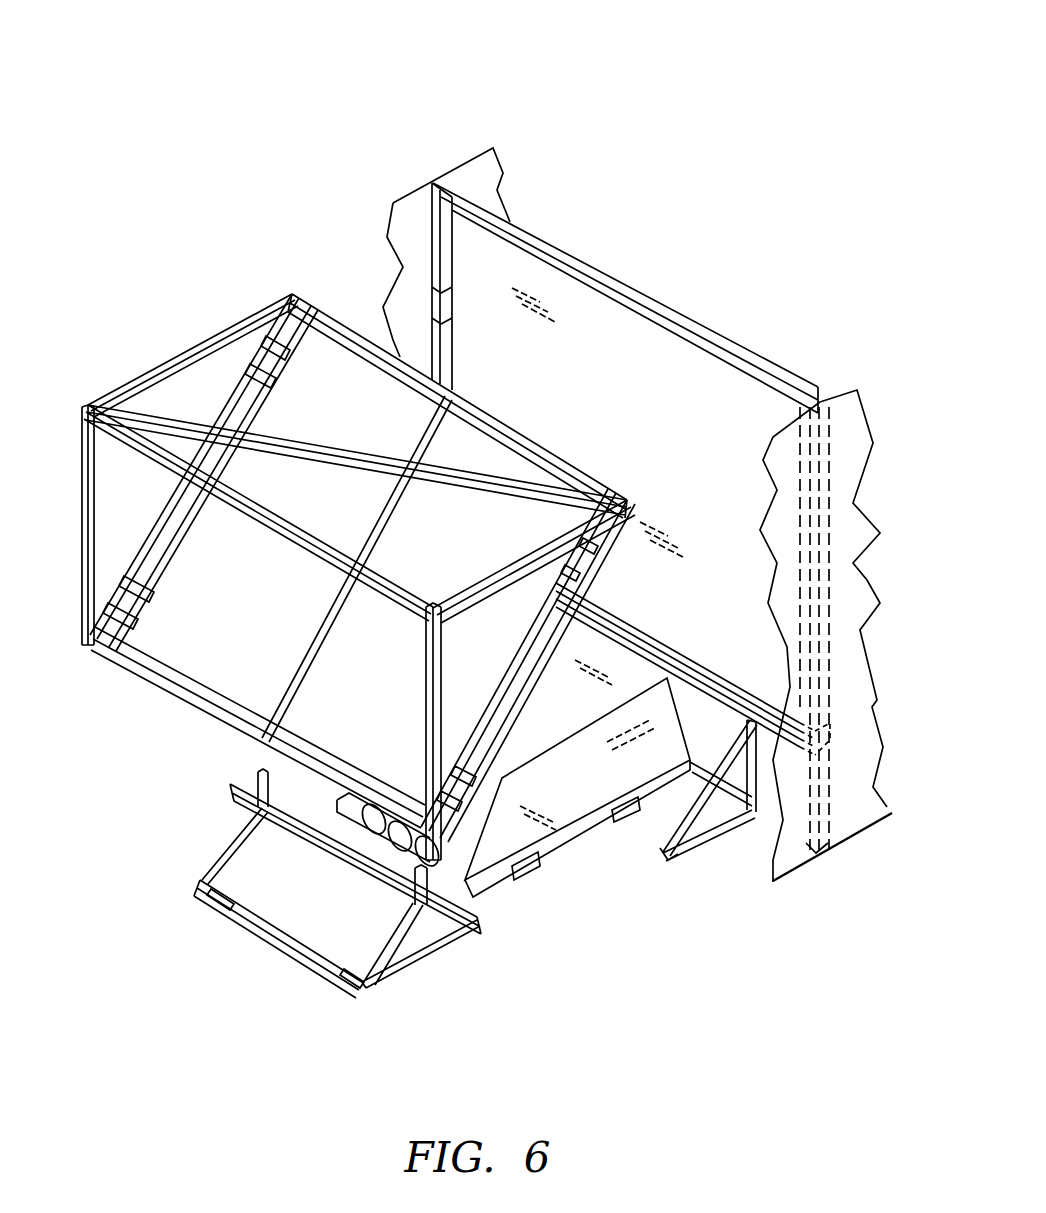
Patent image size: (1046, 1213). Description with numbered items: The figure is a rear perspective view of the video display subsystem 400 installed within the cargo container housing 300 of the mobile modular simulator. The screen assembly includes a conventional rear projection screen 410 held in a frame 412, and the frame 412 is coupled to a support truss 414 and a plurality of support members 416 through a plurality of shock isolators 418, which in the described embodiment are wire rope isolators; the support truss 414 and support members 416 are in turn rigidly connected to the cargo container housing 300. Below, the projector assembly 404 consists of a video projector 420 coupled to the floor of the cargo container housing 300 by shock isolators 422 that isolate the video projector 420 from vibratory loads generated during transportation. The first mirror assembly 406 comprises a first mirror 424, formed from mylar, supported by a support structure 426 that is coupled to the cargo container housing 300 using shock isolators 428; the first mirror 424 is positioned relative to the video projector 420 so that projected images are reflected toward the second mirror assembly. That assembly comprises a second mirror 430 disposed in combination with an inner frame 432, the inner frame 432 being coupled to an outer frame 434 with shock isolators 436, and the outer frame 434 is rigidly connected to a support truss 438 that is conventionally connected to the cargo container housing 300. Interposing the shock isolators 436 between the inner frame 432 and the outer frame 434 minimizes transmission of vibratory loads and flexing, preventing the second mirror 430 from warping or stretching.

The video display subsystem 400 is at (361, 90).
The cargo container housing 300 is at (840, 403).
The projector assembly 404 is at (535, 1003).
The first mirror assembly 406 is at (53, 864).
The rear projection screen 410 is at (560, 391).
The frame 412 is at (566, 250).
The support truss 414 is at (728, 857).
The support members 416 is at (830, 800).
The shock isolators 418 is at (673, 670).
The video projector 420 is at (600, 803).
The shock isolators 422 is at (536, 872).
The first mirror 424 is at (230, 786).
The support structure 426 is at (237, 912).
The shock isolators 428 is at (337, 975).
The second mirror 430 is at (248, 617).
The inner frame 432 is at (147, 648).
The outer frame 434 is at (306, 300).
The shock isolators 436 is at (262, 338).
The support truss 438 is at (88, 402).